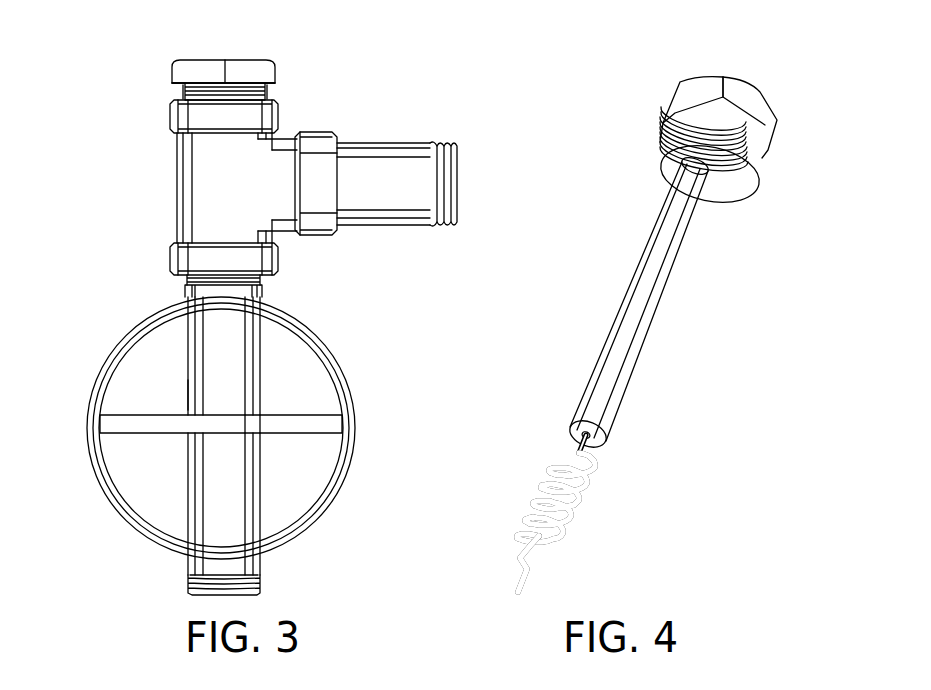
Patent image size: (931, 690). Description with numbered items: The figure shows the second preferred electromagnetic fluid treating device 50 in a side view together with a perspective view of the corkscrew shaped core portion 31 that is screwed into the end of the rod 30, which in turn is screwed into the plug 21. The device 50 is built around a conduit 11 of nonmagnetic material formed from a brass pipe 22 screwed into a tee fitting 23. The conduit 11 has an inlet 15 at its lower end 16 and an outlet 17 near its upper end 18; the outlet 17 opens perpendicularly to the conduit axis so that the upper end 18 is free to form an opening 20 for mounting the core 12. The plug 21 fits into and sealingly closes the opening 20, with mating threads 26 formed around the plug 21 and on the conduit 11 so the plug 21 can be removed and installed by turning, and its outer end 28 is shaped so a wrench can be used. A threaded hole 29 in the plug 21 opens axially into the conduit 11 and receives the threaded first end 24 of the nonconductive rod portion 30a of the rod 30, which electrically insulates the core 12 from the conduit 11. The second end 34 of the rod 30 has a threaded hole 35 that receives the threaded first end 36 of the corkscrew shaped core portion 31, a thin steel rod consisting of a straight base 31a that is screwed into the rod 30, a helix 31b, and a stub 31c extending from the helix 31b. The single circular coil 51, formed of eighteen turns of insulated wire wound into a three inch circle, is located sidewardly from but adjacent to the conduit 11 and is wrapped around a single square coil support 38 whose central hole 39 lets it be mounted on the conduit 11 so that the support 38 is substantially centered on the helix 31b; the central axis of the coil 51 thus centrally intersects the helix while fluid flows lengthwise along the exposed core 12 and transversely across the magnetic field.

In FIG. 3, the conduit 11 is at (177, 222).
In FIG. 4, the core 12 is at (573, 528).
In FIG. 3, the inlet 15 is at (244, 597).
In FIG. 3, the lower end 16 is at (188, 577).
In FIG. 3, the outlet 17 is at (338, 142).
In FIG. 3, the upper end 18 is at (172, 118).
In FIG. 3, the opening 20 is at (181, 97).
In FIG. 3, the plug 21 is at (278, 73).
In FIG. 4, the plug 21 is at (768, 105).
In FIG. 3, the pipe 22 is at (185, 395).
In FIG. 3, the tee fitting 23 is at (177, 162).
In FIG. 4, the first end 24 is at (730, 199).
In FIG. 3, the mating threads 26 is at (268, 92).
In FIG. 4, the mating threads 26 is at (742, 145).
In FIG. 3, the outer end 28 is at (230, 62).
In FIG. 4, the outer end 28 is at (733, 77).
In FIG. 4, the threaded hole 29 is at (673, 183).
In FIG. 4, the rod 30 is at (660, 310).
In FIG. 4, the nonconductive rod portion 30a is at (689, 243).
In FIG. 4, the corkscrew shaped core portion 31 is at (542, 486).
In FIG. 4, the straight base 31a is at (578, 448).
In FIG. 4, the helix 31b is at (578, 515).
In FIG. 4, the stub 31c is at (518, 576).
In FIG. 4, the second end 34 is at (605, 445).
In FIG. 4, the threaded hole 35 is at (580, 430).
In FIG. 4, the first end 36 is at (594, 459).
In FIG. 3, the coil support 38 is at (163, 432).
In FIG. 3, the central hole 39 is at (260, 416).
In FIG. 3, the second preferred electromagnetic fluid treating device 50 is at (150, 289).
In FIG. 3, the coil 51 is at (303, 322).